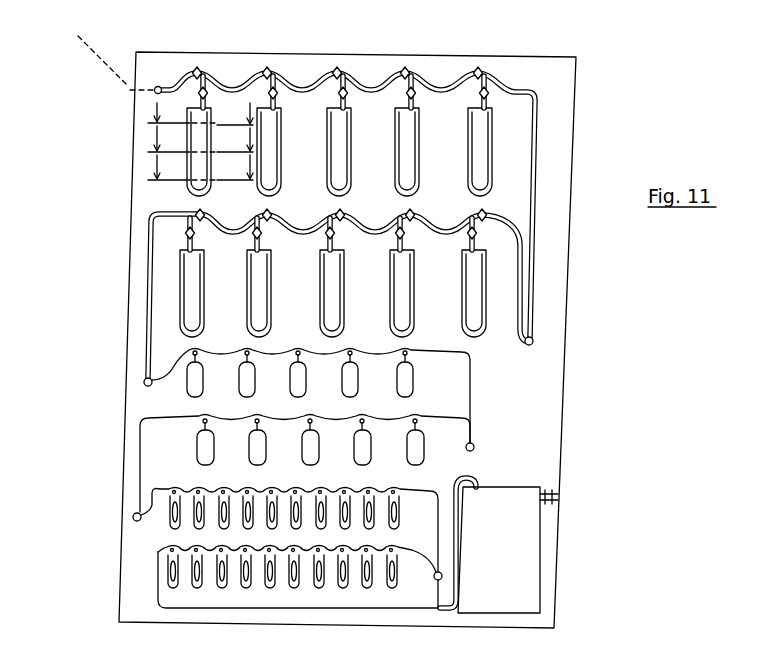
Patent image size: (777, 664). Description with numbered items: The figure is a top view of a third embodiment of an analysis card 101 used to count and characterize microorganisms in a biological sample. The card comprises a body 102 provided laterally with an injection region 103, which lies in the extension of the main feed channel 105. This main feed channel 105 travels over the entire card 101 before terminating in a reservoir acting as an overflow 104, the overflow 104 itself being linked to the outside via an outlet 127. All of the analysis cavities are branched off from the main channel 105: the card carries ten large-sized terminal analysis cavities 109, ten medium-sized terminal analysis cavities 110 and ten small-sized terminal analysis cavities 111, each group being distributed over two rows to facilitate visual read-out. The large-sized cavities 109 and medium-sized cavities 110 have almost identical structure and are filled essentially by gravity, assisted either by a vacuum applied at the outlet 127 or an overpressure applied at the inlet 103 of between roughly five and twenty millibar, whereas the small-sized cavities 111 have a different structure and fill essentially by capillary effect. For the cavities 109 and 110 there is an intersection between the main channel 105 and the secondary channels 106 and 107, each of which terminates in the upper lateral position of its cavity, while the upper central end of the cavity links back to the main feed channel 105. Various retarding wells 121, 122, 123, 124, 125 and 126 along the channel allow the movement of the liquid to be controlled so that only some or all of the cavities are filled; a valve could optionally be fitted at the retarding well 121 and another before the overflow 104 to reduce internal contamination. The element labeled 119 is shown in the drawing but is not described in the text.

The analysis card 101 is at (367, 334).
The body 102 is at (517, 418).
The injection region 103 is at (96, 54).
The overflow 104 is at (497, 590).
The main feed channel 105 is at (168, 88).
The secondary channel 106 is at (418, 82).
The secondary channel 107 is at (172, 388).
The large-sized terminal analysis cavity 109 is at (482, 180).
The medium-sized terminal analysis cavity 110 is at (420, 458).
The small-sized terminal analysis cavity 111 is at (170, 518).
The reservoir outlet 119 is at (490, 318).
The retarding well 121 is at (156, 93).
The retarding well 122 is at (532, 339).
The retarding well 123 is at (145, 380).
The retarding well 124 is at (474, 447).
The retarding well 125 is at (134, 518).
The retarding well 126 is at (443, 614).
The outlet 127 is at (560, 497).